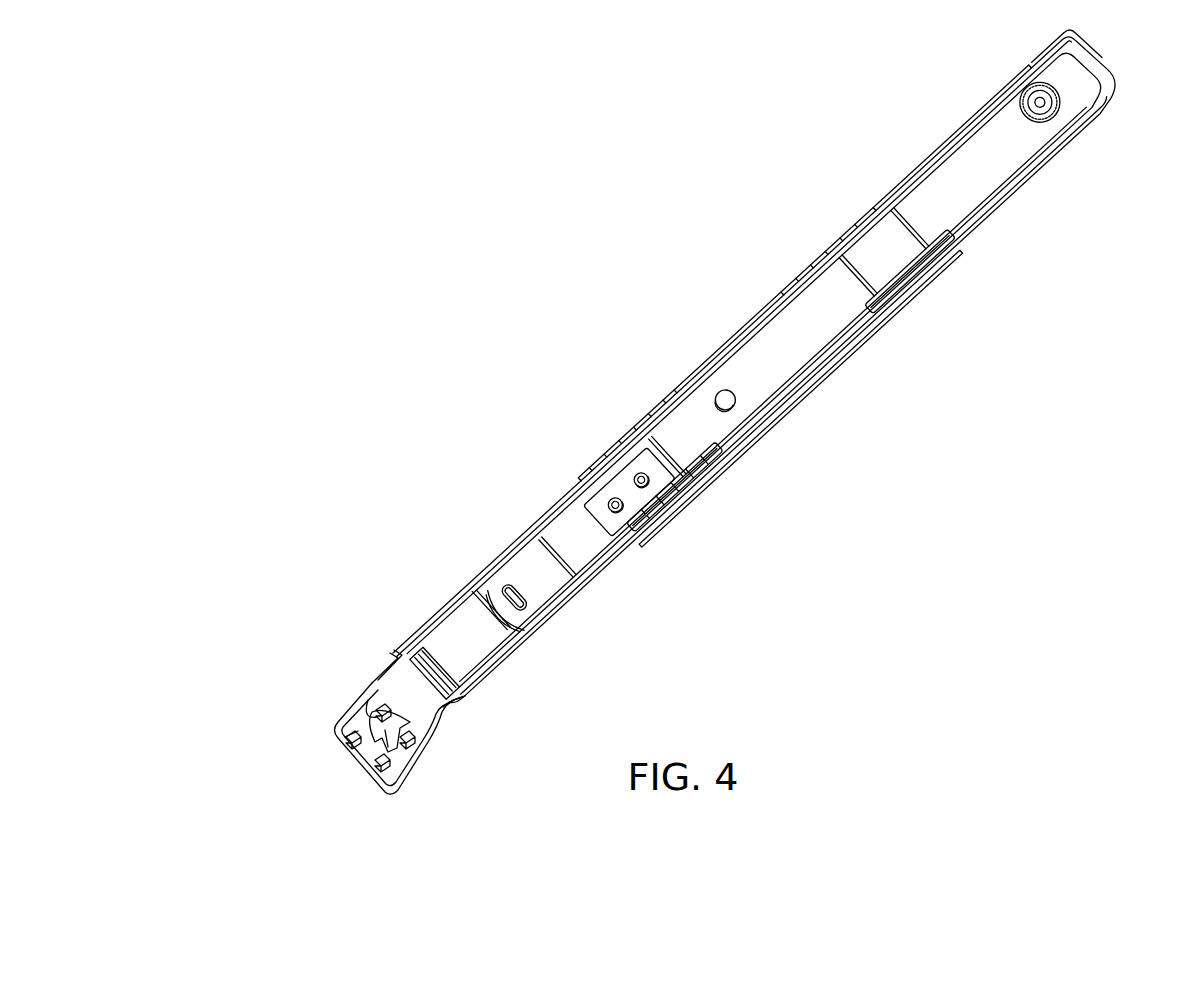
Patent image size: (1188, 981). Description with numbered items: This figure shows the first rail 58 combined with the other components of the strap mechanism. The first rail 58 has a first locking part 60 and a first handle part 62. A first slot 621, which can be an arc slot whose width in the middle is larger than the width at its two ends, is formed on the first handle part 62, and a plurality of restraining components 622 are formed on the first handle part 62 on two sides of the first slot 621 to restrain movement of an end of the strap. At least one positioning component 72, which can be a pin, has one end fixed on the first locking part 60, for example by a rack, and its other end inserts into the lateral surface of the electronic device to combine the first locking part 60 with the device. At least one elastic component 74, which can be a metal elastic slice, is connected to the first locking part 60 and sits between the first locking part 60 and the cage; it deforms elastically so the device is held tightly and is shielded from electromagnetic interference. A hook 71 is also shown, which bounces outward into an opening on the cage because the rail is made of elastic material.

The first rail 58 is at (455, 398).
The first locking part 60 is at (543, 496).
The first handle part 62 is at (382, 516).
The first slot 621 is at (386, 745).
The restraining components 622 is at (406, 734).
The hook 71 is at (433, 686).
The positioning component 72 is at (1050, 113).
The elastic component 74 is at (588, 540).